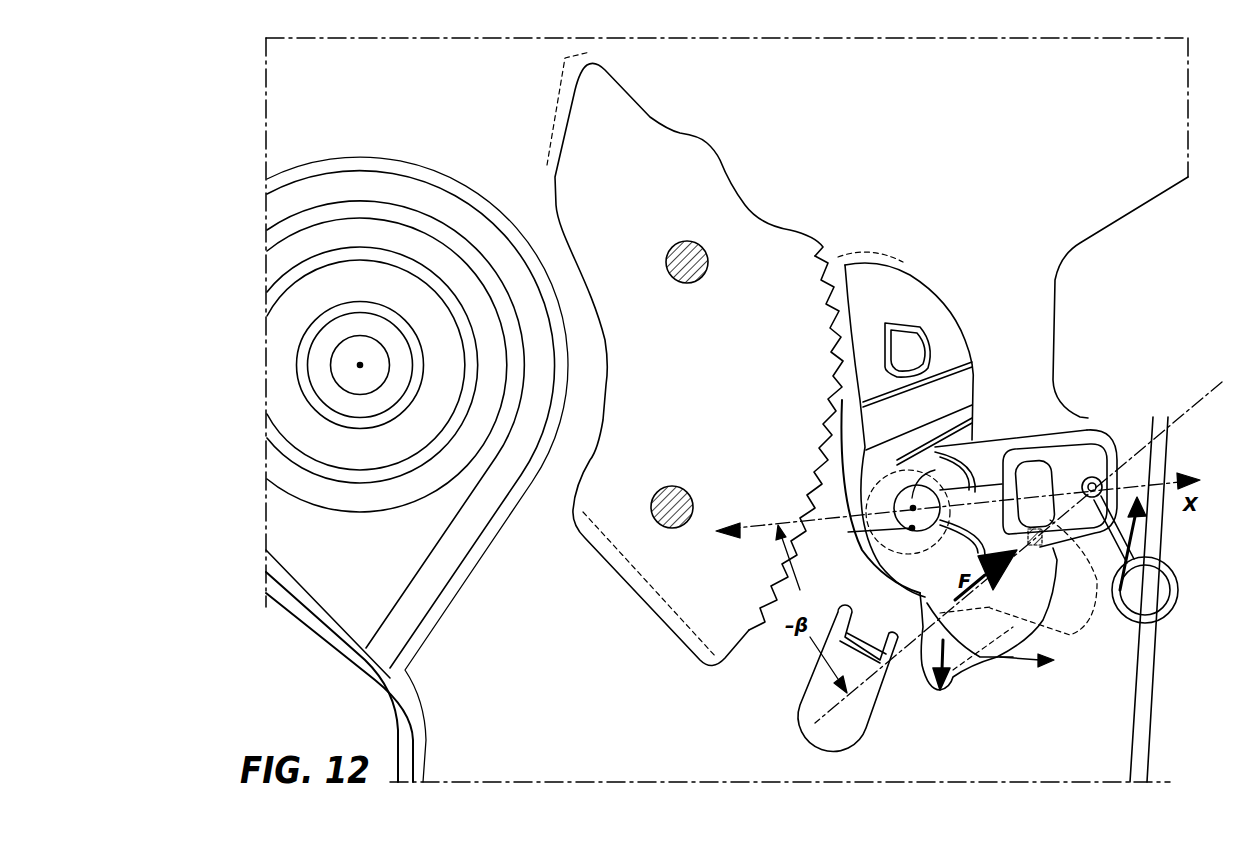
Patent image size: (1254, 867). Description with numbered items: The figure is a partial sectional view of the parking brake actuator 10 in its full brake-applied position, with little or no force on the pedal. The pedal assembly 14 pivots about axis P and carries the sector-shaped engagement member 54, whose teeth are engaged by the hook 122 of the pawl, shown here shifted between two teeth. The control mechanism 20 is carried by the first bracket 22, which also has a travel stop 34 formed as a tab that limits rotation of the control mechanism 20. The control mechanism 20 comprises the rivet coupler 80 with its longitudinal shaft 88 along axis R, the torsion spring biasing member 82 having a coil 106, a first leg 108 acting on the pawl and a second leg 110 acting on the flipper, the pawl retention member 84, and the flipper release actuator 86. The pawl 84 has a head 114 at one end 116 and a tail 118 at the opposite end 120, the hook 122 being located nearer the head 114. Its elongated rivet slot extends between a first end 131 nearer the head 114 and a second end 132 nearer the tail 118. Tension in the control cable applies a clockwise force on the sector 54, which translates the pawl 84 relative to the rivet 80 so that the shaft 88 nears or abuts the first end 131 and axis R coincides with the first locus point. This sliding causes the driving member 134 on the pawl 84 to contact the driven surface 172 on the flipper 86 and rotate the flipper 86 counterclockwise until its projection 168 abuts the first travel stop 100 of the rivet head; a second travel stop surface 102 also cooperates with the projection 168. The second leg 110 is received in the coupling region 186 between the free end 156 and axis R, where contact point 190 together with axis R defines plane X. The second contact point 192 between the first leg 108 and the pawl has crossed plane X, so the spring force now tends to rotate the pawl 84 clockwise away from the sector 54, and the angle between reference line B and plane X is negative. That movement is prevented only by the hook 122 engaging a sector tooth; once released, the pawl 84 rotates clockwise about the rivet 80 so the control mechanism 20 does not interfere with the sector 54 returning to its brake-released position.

The actuator 10 is at (1060, 114).
The pedal assembly 14 is at (360, 132).
The control mechanism 20 is at (1008, 665).
The first bracket 22 is at (1033, 262).
The travel stop 34 is at (869, 645).
The engagement member 54 is at (575, 192).
The coupler 80 is at (883, 552).
The biasing member 82 is at (1132, 620).
The retention member 84 is at (941, 313).
The release actuator 86 is at (1080, 420).
The shaft 88 is at (883, 511).
The first travel stop 100 is at (977, 490).
The second travel stop surface 102 is at (950, 537).
The coil 106 is at (1177, 607).
The first leg 108 is at (1068, 577).
The second leg 110 is at (1157, 537).
The head 114 is at (884, 290).
The end 116 is at (852, 277).
The tail 118 is at (960, 673).
The opposite end 120 is at (920, 677).
The hook 122 is at (822, 382).
The first end 131 is at (909, 485).
The second end 132 is at (877, 543).
The driving member 134 is at (911, 478).
The free end 156 is at (1168, 458).
The projection 168 is at (1037, 494).
The driven surface 172 is at (806, 410).
The coupling region 186 is at (1117, 440).
The contact point 190 is at (1127, 500).
The second contact point 192 is at (1040, 543).